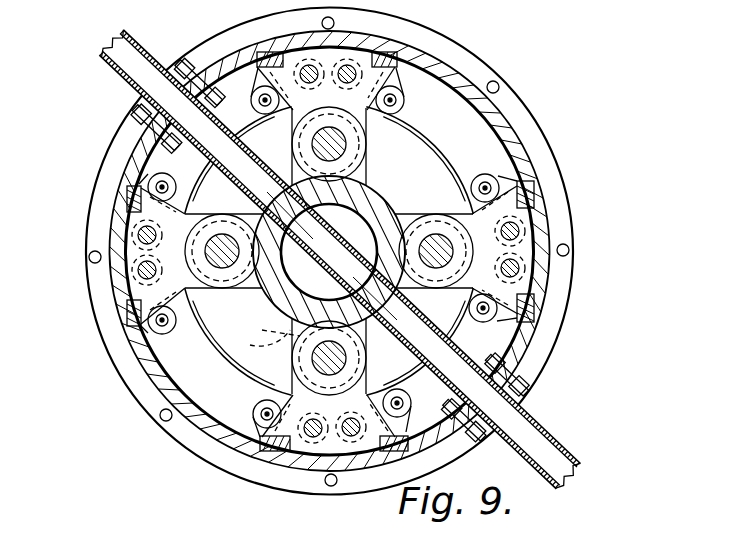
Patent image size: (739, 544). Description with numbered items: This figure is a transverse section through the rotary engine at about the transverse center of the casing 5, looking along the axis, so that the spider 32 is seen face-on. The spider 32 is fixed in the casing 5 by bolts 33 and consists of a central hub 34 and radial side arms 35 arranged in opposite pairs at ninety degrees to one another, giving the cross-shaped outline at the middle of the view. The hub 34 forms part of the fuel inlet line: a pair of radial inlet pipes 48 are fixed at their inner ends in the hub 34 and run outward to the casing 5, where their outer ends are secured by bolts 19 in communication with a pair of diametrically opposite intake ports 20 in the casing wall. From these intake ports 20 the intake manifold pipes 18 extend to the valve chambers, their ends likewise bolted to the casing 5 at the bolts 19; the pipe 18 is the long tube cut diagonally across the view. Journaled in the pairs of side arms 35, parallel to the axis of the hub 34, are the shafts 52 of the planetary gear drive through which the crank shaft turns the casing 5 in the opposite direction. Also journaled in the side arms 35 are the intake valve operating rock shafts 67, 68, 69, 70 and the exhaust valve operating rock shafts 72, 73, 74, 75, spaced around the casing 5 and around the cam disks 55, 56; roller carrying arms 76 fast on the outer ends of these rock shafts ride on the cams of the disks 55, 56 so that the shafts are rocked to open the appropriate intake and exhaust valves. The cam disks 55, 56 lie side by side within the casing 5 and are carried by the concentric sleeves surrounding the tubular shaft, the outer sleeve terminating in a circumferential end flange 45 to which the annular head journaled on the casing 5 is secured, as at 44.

The casing 5 is at (503, 125).
The intake manifold pipes 18 is at (110, 58).
The bolts 19 is at (182, 62).
The intake ports 20 is at (140, 128).
The spider 32 is at (346, 149).
The bolts 33 is at (380, 50).
The hub 34 is at (377, 203).
The radial side arms 35 is at (267, 332).
The securing means 44 is at (502, 83).
The circumferential end flange 45 is at (477, 68).
The radial inlet pipes 48 is at (225, 177).
The shafts 52 is at (436, 236).
The cam disk 55 is at (437, 137).
The cam disk 56 is at (257, 372).
The intake valve operating rock shaft 67 is at (303, 64).
The intake valve operating rock shaft 68 is at (138, 233).
The intake valve operating rock shaft 69 is at (521, 267).
The intake valve operating rock shaft 70 is at (353, 441).
The exhaust valve operating rock shaft 72 is at (354, 64).
The exhaust valve operating rock shaft 73 is at (138, 277).
The exhaust valve operating rock shaft 74 is at (521, 230).
The exhaust valve operating rock shaft 75 is at (309, 439).
The roller carrying arms 76 is at (263, 88).